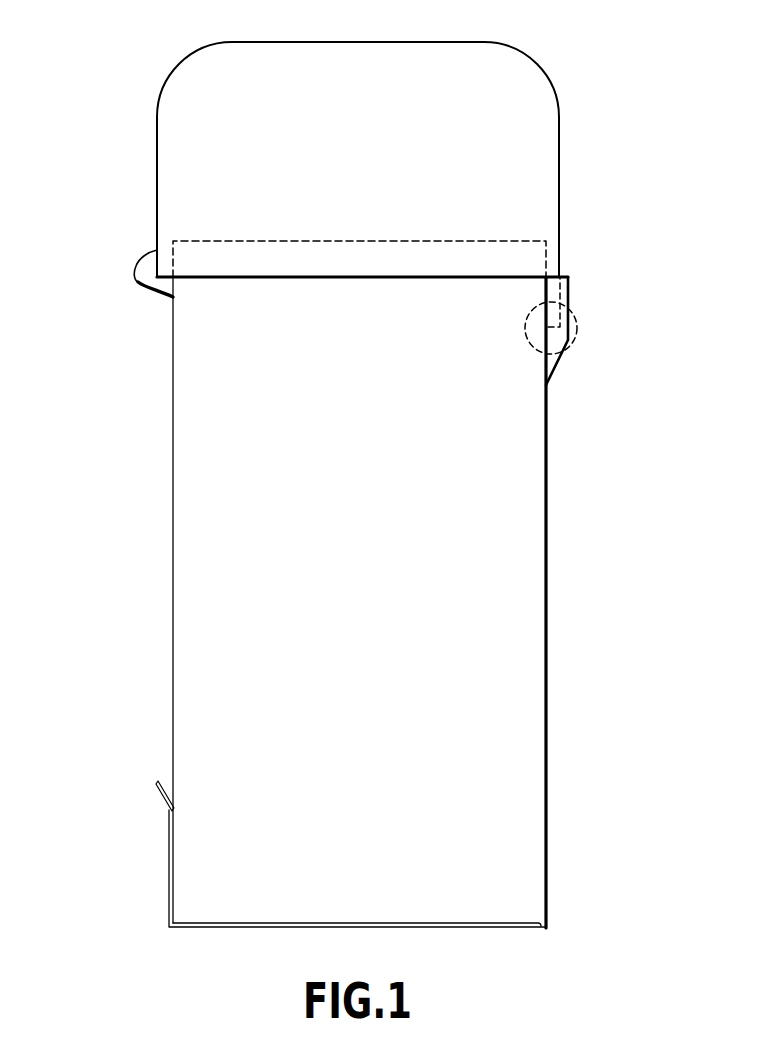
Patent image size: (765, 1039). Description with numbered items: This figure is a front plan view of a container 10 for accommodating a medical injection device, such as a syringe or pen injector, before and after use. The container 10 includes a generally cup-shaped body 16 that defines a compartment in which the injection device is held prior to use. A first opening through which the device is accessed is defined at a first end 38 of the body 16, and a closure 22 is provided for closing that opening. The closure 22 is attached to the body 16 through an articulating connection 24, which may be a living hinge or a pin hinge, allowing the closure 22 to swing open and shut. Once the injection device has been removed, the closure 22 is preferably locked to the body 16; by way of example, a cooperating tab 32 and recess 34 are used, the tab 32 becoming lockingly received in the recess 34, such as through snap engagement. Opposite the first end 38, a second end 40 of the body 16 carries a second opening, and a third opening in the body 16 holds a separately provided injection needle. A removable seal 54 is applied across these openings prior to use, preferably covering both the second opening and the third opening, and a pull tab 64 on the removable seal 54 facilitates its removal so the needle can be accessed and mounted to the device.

The container 10 is at (572, 60).
The body 16 is at (530, 560).
The closure 22 is at (553, 133).
The articulating connection 24 is at (135, 268).
The tab 32 is at (550, 299).
The recess 34 is at (552, 356).
The first end 38 is at (490, 241).
The second end 40 is at (472, 917).
The removable seal 54 is at (223, 928).
The pull tab 64 is at (155, 795).